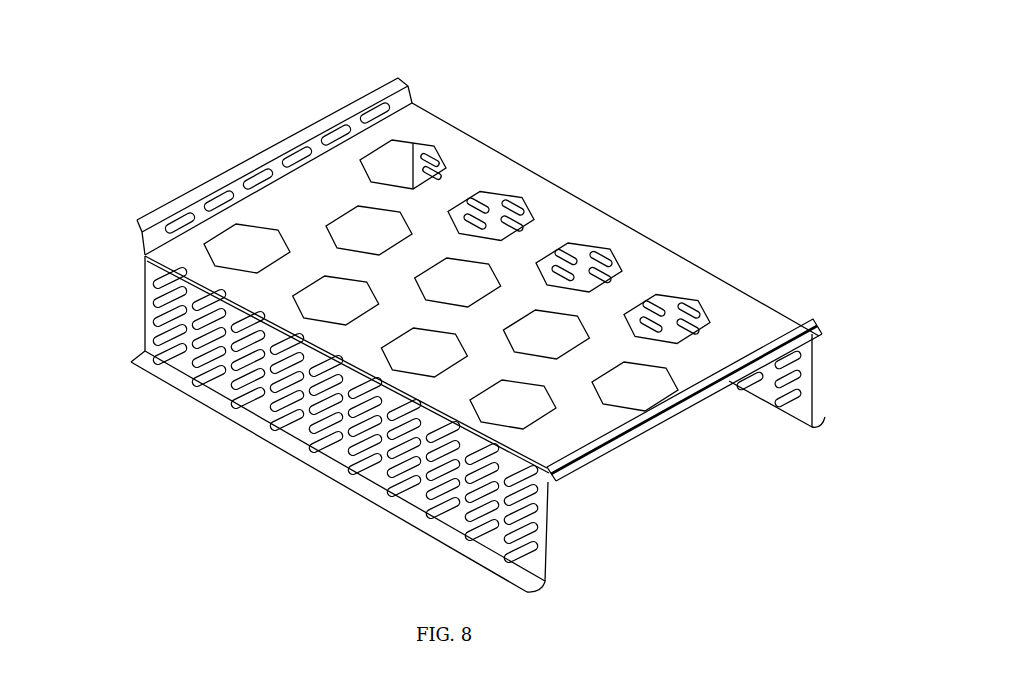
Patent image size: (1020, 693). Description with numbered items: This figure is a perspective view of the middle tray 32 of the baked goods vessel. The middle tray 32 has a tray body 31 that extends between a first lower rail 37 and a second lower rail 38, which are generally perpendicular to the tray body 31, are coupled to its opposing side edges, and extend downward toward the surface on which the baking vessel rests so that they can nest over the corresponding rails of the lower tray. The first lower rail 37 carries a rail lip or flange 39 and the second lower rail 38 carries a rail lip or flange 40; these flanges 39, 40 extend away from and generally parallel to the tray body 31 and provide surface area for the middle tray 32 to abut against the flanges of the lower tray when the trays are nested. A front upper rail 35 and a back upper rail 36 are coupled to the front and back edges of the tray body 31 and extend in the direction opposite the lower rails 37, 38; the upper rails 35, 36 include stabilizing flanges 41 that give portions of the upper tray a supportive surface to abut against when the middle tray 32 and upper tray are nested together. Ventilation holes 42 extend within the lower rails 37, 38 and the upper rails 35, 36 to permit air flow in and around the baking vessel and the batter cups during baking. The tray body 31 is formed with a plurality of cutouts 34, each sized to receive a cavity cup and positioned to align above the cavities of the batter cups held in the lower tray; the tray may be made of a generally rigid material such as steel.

The tray body 31 is at (668, 270).
The middle tray 32 is at (205, 76).
The cutouts 34 is at (540, 411).
The front upper rail 35 is at (148, 247).
The back upper rail 36 is at (563, 478).
The first lower rail 37 is at (814, 375).
The second lower rail 38 is at (305, 428).
The rail lip or flange 39 is at (824, 417).
The rail lip or flange 40 is at (263, 427).
The stabilizing flanges 41 is at (210, 186).
The ventilation holes 42 is at (402, 457).